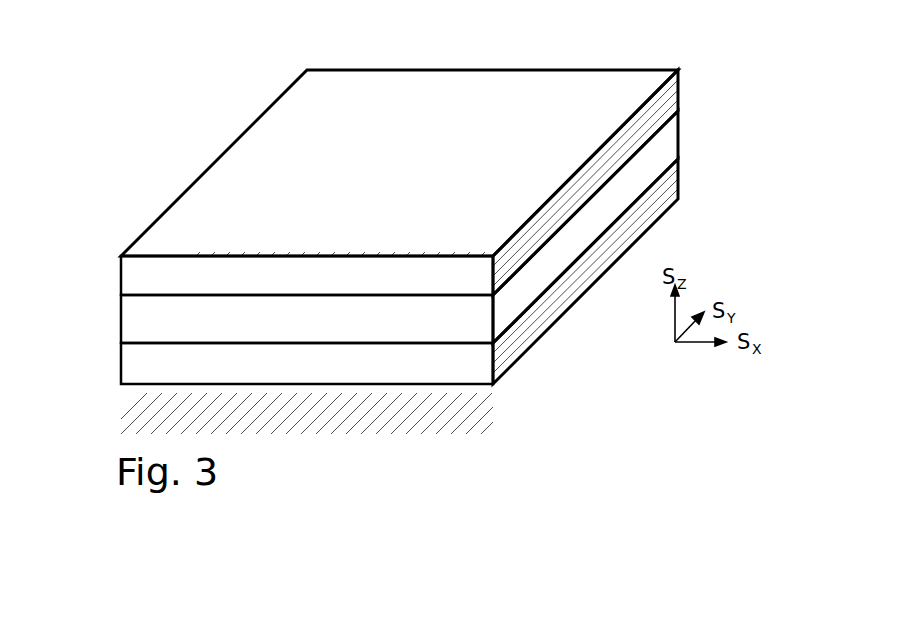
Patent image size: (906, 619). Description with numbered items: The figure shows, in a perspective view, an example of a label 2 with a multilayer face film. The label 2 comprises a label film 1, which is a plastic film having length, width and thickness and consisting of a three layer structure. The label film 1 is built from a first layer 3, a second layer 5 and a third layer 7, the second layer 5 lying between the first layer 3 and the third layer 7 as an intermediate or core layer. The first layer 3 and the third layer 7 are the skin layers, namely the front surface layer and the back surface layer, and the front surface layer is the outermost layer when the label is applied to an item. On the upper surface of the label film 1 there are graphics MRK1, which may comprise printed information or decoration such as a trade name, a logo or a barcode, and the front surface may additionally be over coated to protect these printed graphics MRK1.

The label film 1 is at (100, 252).
The label 2 is at (453, 56).
The first layer 3 is at (678, 98).
The second layer 5 is at (678, 136).
The third layer 7 is at (680, 181).
The graphics MRK1 is at (300, 153).